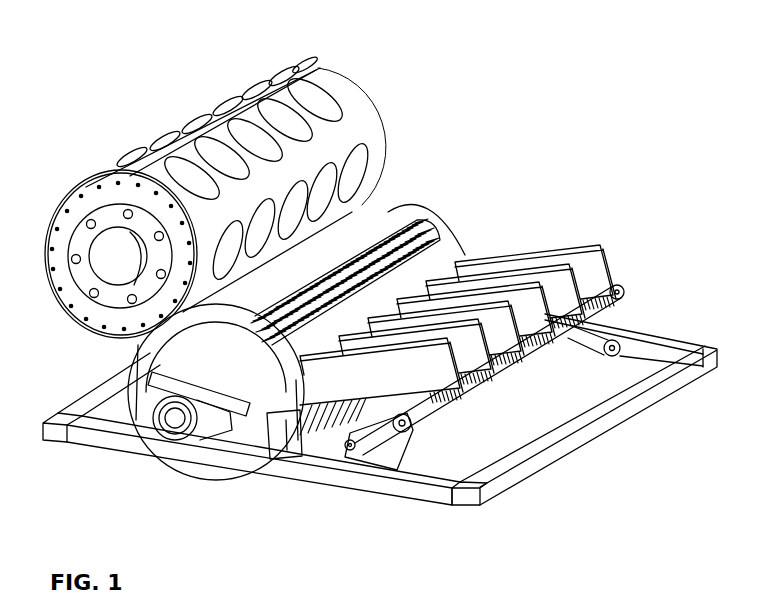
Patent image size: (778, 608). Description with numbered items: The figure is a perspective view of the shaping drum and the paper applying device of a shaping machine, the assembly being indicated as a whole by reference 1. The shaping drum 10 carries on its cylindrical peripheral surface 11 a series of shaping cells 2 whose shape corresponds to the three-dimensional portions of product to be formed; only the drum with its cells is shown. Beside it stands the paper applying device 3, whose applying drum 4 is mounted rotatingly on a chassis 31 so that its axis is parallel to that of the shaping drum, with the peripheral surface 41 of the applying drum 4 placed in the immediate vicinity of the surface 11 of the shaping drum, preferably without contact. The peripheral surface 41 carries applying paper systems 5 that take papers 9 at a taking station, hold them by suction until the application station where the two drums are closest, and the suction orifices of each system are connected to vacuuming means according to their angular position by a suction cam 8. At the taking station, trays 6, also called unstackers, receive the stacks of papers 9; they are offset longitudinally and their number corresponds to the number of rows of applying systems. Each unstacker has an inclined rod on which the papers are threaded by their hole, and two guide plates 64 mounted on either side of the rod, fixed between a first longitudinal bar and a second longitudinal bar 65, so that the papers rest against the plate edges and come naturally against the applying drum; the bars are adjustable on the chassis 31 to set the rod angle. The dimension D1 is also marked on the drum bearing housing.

The apparatus 1 is at (373, 92).
The shaping cells 2 is at (317, 80).
The paper applying device 3 is at (380, 426).
The applying drum 4 is at (417, 225).
The applying paper systems 5 is at (317, 440).
The trays 6 is at (501, 325).
The suction cam 8 is at (160, 358).
The papers 9 is at (392, 197).
The shaping drum 10 is at (355, 83).
The peripheral surface of the shaping drum 11 is at (283, 72).
The chassis 31 is at (413, 490).
The peripheral surface of the applying drum 41 is at (428, 232).
The guide plates 64 is at (582, 248).
The second longitudinal bar 65 is at (625, 283).
The diameter D1 is at (242, 450).